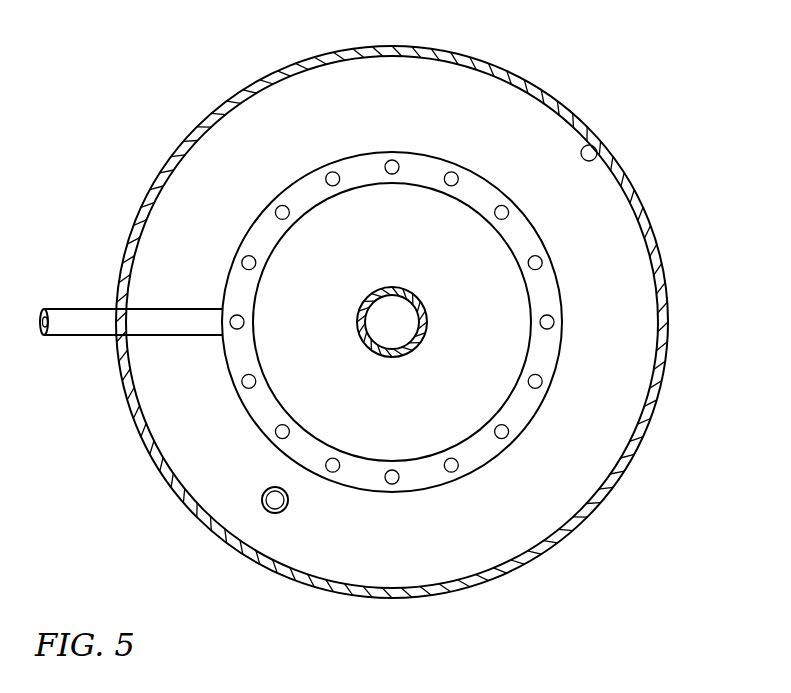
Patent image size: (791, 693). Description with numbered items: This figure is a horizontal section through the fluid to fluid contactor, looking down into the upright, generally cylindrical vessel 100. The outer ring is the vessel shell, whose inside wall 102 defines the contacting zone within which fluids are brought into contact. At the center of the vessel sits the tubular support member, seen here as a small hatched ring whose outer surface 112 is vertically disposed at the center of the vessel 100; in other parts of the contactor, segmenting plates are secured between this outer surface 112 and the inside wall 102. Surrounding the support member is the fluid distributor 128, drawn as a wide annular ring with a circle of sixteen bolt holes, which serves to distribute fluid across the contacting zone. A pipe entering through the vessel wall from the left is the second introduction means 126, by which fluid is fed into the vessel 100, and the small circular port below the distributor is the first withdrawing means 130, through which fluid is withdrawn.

The generally cylindrical vessel 100 is at (512, 72).
The inside wall 102 is at (599, 147).
The outer surface 112 is at (392, 287).
The second introduction means 126 is at (70, 337).
The fluid distributor 128 is at (300, 177).
The first withdrawing means 130 is at (289, 503).